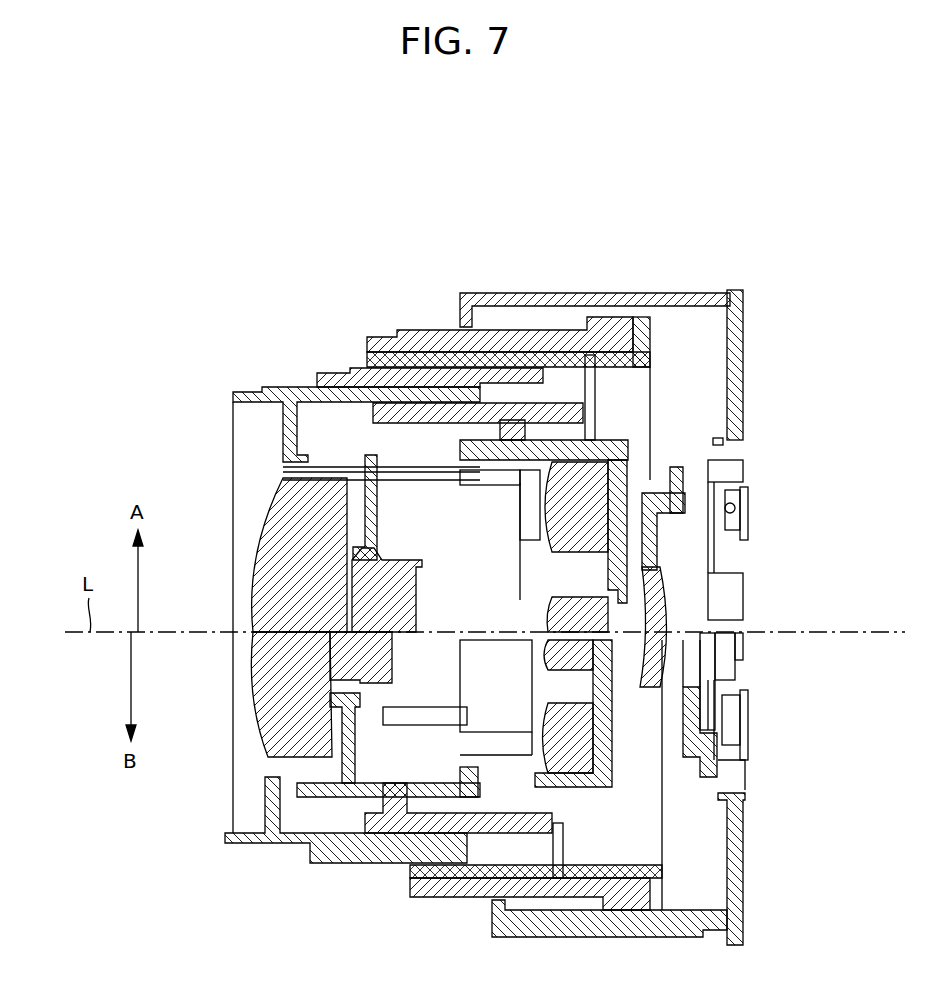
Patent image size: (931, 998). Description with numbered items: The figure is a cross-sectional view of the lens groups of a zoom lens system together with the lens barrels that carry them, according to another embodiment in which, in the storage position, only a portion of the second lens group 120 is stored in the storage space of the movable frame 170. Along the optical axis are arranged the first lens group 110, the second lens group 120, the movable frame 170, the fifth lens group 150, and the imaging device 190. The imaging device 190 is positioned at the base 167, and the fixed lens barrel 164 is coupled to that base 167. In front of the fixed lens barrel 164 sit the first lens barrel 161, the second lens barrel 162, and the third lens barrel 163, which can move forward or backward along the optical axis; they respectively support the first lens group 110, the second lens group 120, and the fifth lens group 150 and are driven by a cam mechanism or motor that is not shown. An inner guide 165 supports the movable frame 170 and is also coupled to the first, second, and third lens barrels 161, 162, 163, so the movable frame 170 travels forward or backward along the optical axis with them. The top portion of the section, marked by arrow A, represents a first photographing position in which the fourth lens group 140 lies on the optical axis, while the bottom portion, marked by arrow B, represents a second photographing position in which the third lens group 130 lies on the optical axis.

The first lens group 110 is at (273, 512).
The second lens group 120 is at (332, 672).
The third lens group 130 is at (600, 510).
The fourth lens group 140 is at (600, 628).
The fifth lens group 150 is at (655, 605).
The first lens barrel 161 is at (248, 387).
The second lens barrel 162 is at (330, 372).
The third lens barrel 163 is at (418, 333).
The fixed lens barrel 164 is at (540, 293).
The inner guide 165 is at (610, 448).
The base 167 is at (743, 316).
The movable frame 170 is at (610, 470).
The imaging device 190 is at (730, 670).